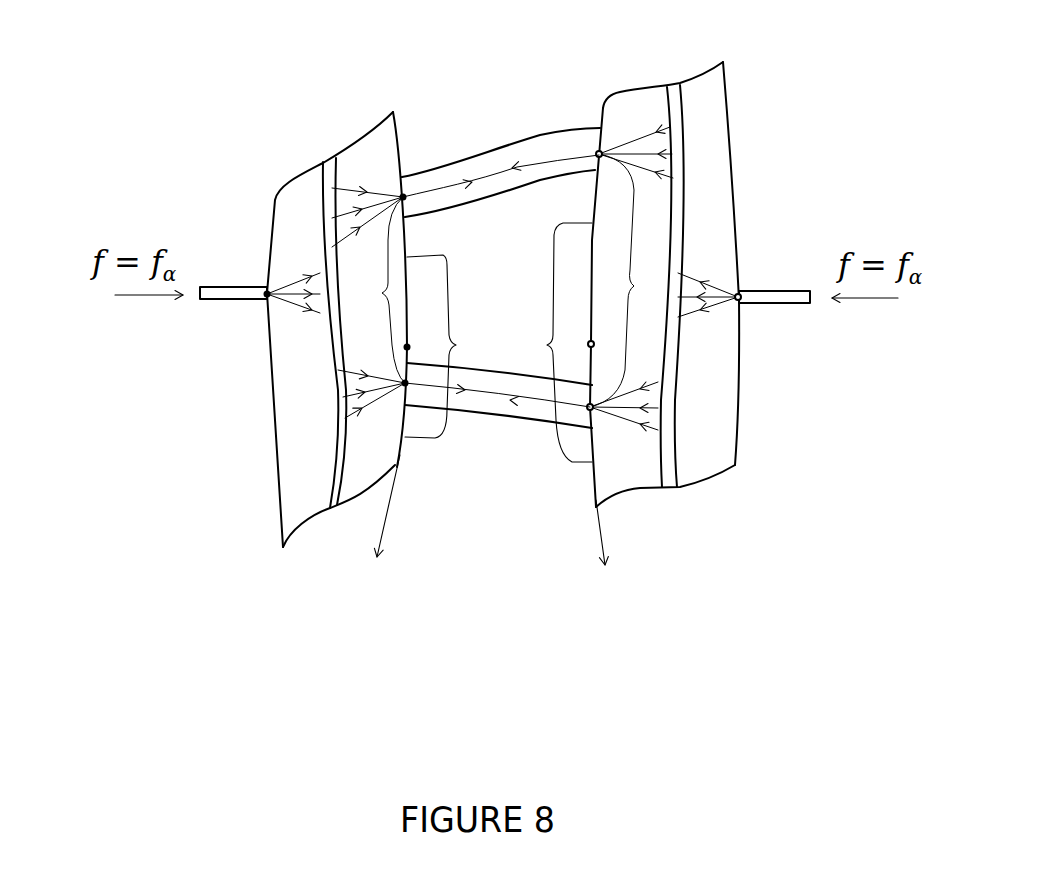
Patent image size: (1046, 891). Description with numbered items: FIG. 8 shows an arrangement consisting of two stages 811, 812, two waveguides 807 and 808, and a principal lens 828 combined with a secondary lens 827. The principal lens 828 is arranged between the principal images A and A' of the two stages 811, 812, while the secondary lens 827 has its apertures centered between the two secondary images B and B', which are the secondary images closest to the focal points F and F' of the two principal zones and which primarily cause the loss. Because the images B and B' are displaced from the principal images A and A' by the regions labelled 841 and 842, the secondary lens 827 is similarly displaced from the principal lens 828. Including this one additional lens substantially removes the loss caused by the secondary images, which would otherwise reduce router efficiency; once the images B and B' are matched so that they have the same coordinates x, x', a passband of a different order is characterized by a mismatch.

The waveguide 807 is at (230, 287).
The waveguide 808 is at (768, 305).
The stage 811 is at (388, 588).
The stage 812 is at (732, 602).
The secondary lens 827 is at (530, 140).
The principal lens 828 is at (525, 427).
The first region Ω 841 is at (458, 345).
The second region Ω′ 842 is at (546, 342).